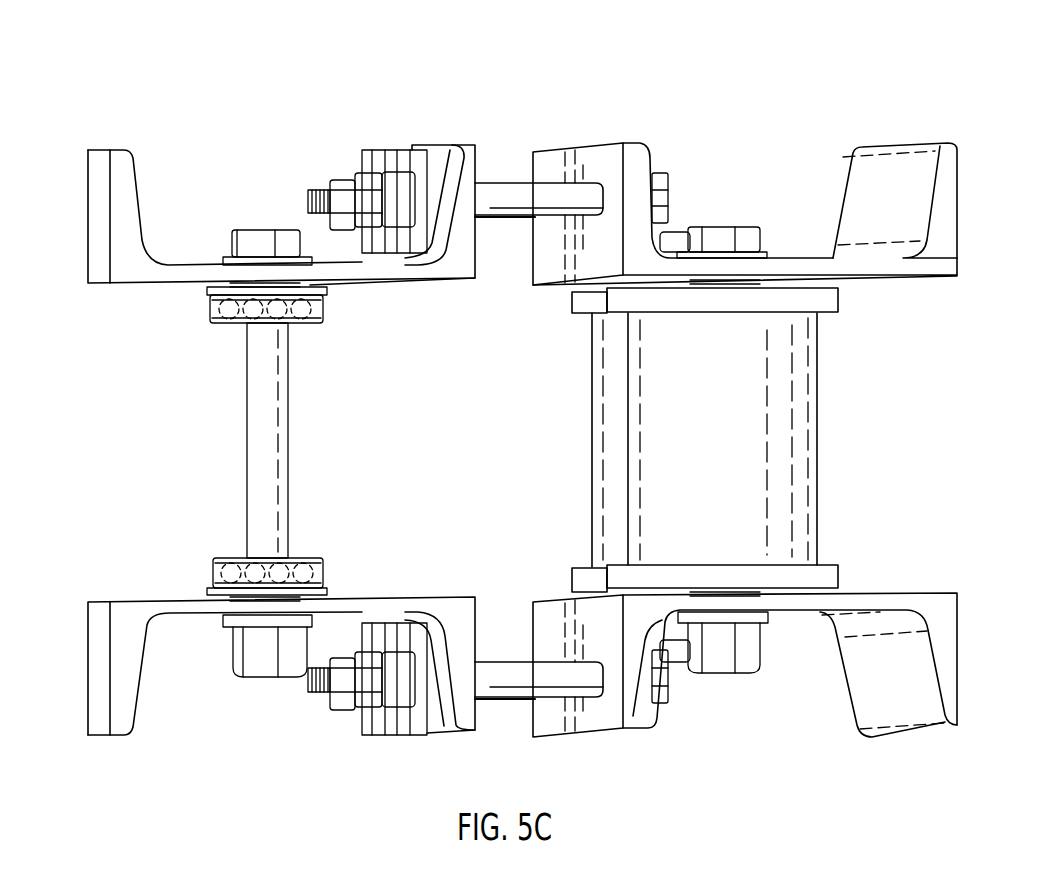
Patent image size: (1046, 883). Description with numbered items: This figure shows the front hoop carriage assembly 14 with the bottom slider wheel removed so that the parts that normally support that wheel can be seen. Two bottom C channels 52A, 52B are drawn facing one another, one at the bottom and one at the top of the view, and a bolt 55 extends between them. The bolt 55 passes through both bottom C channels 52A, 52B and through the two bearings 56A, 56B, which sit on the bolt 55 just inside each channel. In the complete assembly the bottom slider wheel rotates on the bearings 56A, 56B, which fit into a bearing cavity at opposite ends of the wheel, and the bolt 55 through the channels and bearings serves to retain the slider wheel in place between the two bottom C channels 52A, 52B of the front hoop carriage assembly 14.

The front hoop carriage assembly 14 is at (163, 56).
The bottom C channel 52A is at (98, 672).
The bottom C channel 52B is at (98, 195).
The bolt 55 is at (257, 433).
The bearing 56A is at (323, 573).
The bearing 56B is at (323, 308).